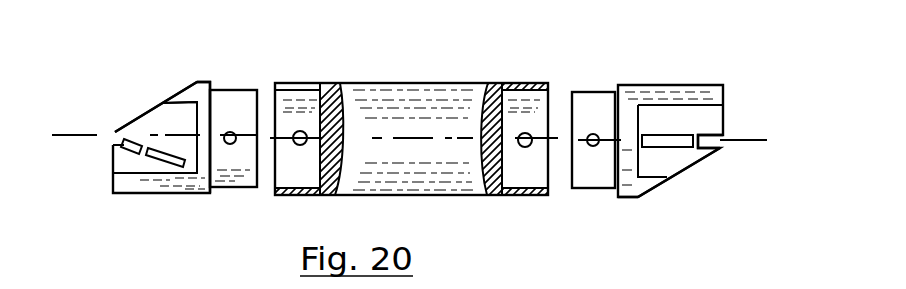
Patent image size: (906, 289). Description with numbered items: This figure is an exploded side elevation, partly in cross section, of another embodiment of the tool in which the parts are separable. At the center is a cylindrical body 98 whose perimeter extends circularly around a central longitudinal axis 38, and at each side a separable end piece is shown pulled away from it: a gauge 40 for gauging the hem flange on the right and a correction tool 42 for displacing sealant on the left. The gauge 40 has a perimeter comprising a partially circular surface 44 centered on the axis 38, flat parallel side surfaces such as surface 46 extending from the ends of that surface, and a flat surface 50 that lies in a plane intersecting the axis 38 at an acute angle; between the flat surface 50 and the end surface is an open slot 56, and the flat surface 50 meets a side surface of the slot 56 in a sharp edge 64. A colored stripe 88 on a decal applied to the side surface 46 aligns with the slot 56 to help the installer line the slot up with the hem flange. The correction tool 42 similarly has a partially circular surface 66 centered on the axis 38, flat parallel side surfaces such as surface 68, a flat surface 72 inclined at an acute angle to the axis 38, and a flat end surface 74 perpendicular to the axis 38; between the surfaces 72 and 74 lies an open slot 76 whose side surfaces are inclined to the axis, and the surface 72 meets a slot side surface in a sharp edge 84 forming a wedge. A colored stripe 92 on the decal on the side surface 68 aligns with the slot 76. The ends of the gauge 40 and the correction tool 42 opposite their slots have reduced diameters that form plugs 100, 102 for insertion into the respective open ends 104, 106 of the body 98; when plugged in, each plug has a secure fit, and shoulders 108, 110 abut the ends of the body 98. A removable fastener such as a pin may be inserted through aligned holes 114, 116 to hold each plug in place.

The central longitudinal axis 38 is at (423, 137).
The gauge 40 is at (755, 100).
The correction tool 42 is at (93, 104).
The partially circular surface 44 is at (700, 93).
The flat parallel side surface 46 is at (675, 160).
The flat surface 50 is at (663, 185).
The open slot 56 is at (707, 158).
The sharp edge 64 is at (710, 144).
The partially circular surface 66 is at (123, 187).
The flat parallel side surface 68 is at (165, 117).
The flat surface 72 is at (177, 90).
The flat end surface 74 is at (113, 165).
The open slot 76 is at (127, 139).
The sharp edge 84 is at (116, 132).
The colored stripe 88 is at (667, 135).
The colored stripe 92 is at (182, 167).
The cylindrical body 98 is at (415, 82).
The plug 100 is at (597, 103).
The plug 102 is at (231, 131).
The open end 104 is at (527, 170).
The open end 106 is at (295, 172).
The shoulder 108 is at (617, 197).
The shoulder 110 is at (212, 162).
The hole 114 is at (301, 131).
The hole 116 is at (235, 100).